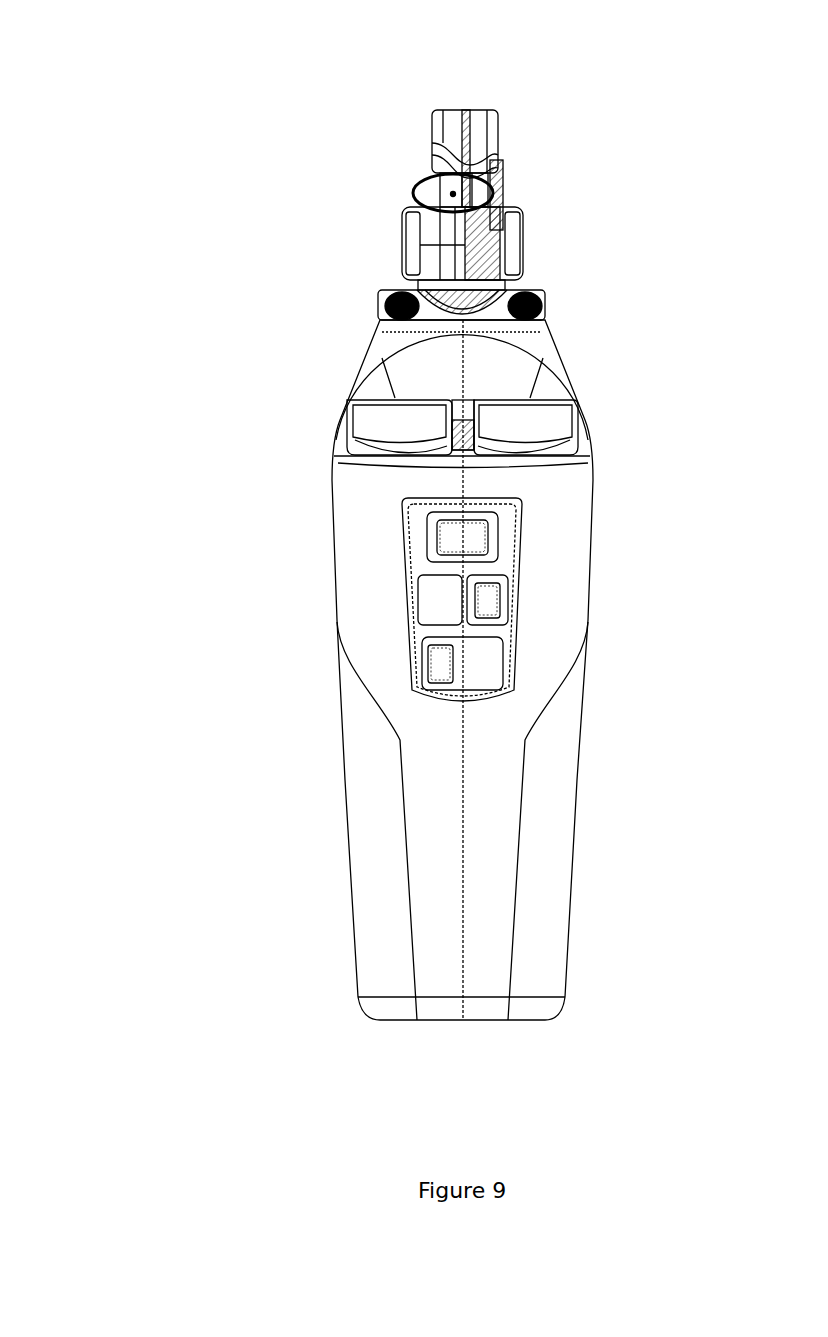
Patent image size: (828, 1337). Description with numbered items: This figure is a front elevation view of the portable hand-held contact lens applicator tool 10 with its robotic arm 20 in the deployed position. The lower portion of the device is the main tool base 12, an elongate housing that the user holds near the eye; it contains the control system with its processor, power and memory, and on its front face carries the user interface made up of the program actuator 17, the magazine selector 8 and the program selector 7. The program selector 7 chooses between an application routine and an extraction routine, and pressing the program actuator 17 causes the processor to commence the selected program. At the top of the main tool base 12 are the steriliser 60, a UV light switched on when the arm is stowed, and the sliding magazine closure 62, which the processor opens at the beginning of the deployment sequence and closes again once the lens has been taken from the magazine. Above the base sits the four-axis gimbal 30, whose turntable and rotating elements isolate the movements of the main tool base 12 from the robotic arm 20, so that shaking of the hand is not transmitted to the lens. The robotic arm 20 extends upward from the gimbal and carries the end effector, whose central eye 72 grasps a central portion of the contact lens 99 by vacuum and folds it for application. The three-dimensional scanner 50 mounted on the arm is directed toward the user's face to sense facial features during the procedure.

The contact lens applicator tool 10 is at (257, 883).
The main tool base 12 is at (540, 840).
The robotic arm 20 is at (537, 157).
The four-axis gimbal 30 is at (362, 292).
The 3D scanner 50 is at (537, 290).
The steriliser 60 is at (460, 453).
The magazine closure 62 is at (353, 410).
The central eye 72 is at (453, 194).
The contact lens 99 is at (510, 193).
The program actuator 17 is at (460, 528).
The magazine selector 8 is at (443, 597).
The program selector 7 is at (490, 657).